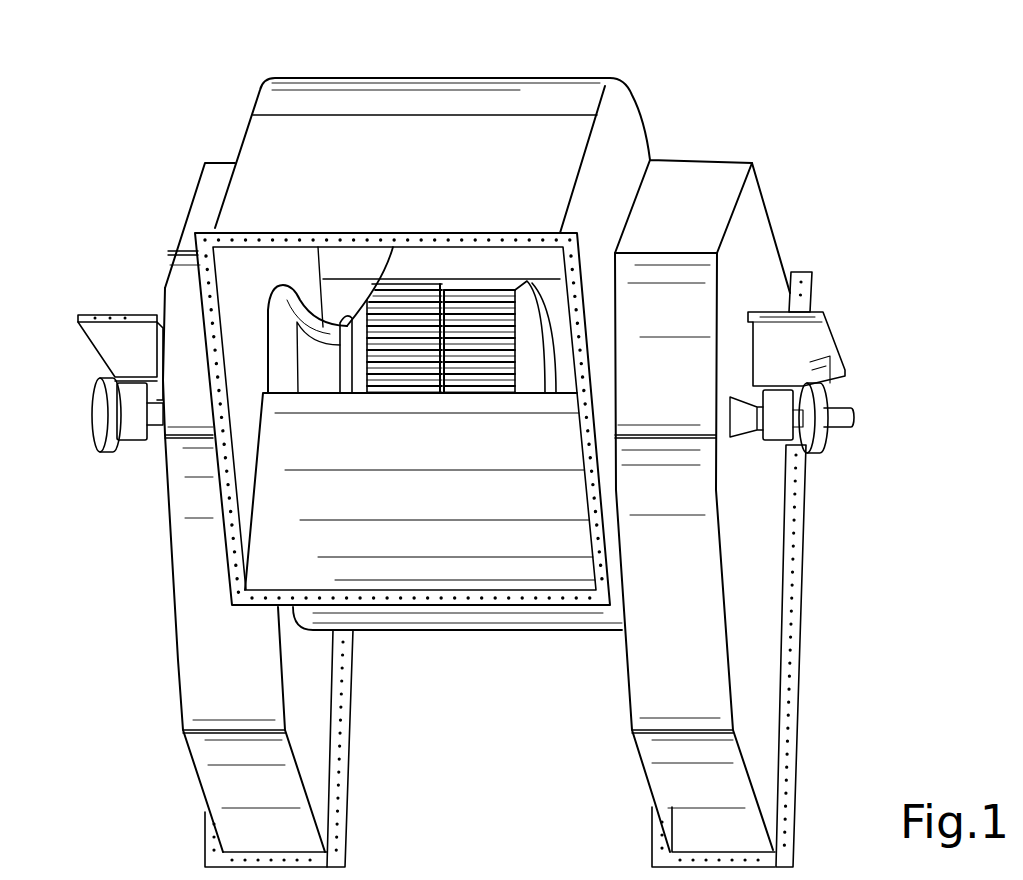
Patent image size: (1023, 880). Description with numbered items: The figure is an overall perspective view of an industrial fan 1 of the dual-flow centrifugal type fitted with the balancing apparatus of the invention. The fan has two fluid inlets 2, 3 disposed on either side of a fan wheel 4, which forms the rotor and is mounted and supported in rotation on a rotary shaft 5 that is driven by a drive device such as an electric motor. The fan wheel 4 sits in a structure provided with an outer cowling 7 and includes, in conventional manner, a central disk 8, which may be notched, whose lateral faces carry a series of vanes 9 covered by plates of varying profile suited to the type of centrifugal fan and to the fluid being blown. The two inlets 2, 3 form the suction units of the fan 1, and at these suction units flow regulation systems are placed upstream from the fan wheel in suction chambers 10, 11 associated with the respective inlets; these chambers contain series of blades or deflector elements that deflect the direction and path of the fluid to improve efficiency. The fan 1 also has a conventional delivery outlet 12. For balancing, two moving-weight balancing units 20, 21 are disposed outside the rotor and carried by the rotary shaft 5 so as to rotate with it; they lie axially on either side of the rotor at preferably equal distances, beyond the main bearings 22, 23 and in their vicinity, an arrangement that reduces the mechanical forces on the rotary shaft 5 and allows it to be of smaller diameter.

The industrial fan 1 is at (697, 117).
The fluid inlet 2 is at (560, 339).
The fluid inlet 3 is at (276, 332).
The fan wheel 4 is at (367, 345).
The rotary shaft 5 is at (845, 408).
The outer cowling 7 is at (309, 124).
The central disk 8 is at (453, 290).
The vanes 9 is at (398, 343).
The suction chamber 10 is at (697, 488).
The suction chamber 11 is at (190, 610).
The delivery outlet 12 is at (440, 568).
The moving-weight balancing unit 20 is at (823, 445).
The moving-weight balancing unit 21 is at (101, 433).
The main bearing 22 is at (797, 338).
The main bearing 23 is at (108, 337).